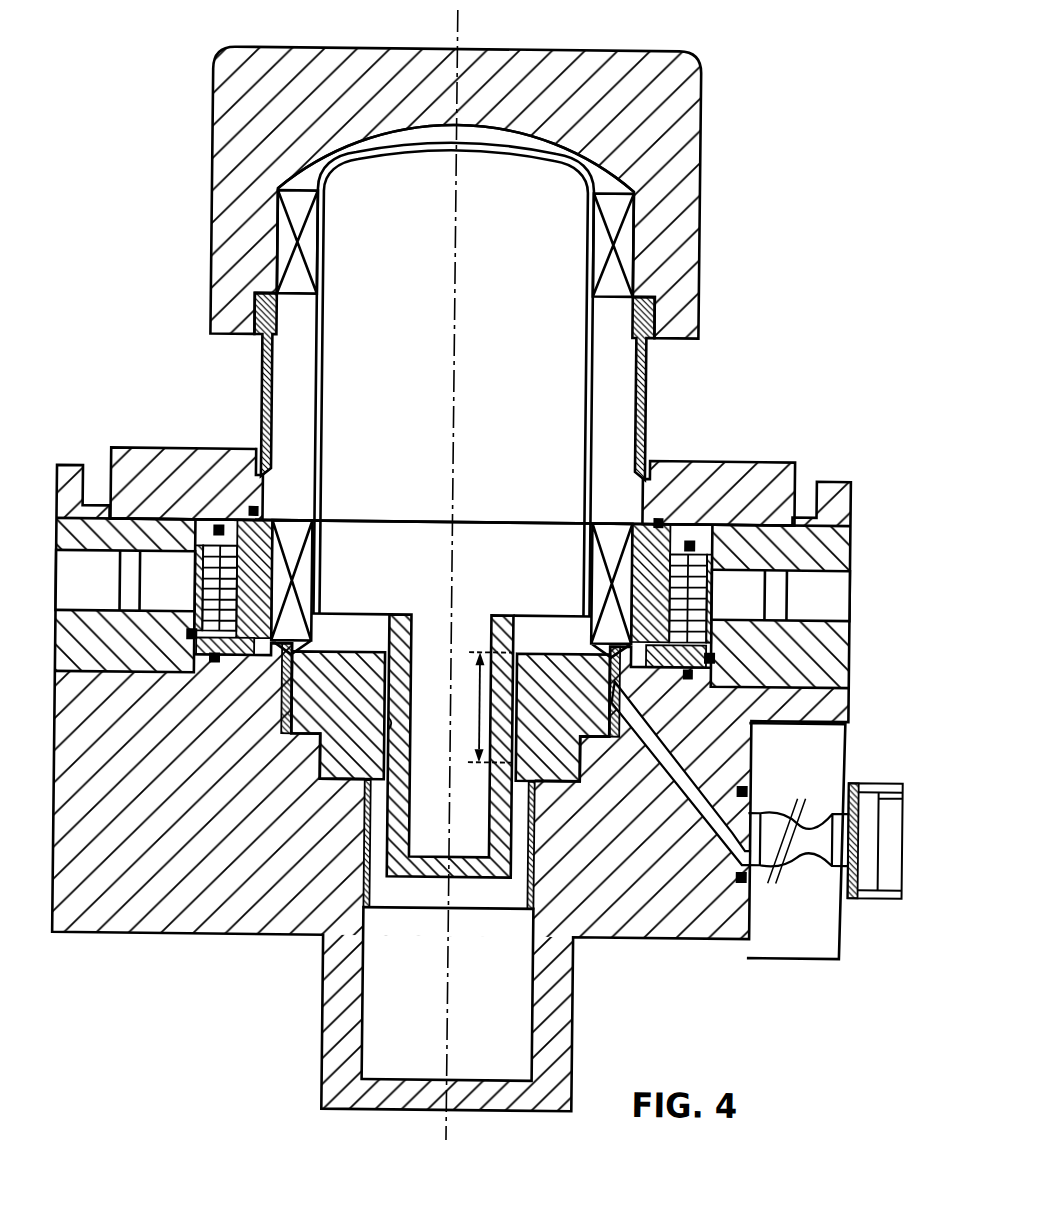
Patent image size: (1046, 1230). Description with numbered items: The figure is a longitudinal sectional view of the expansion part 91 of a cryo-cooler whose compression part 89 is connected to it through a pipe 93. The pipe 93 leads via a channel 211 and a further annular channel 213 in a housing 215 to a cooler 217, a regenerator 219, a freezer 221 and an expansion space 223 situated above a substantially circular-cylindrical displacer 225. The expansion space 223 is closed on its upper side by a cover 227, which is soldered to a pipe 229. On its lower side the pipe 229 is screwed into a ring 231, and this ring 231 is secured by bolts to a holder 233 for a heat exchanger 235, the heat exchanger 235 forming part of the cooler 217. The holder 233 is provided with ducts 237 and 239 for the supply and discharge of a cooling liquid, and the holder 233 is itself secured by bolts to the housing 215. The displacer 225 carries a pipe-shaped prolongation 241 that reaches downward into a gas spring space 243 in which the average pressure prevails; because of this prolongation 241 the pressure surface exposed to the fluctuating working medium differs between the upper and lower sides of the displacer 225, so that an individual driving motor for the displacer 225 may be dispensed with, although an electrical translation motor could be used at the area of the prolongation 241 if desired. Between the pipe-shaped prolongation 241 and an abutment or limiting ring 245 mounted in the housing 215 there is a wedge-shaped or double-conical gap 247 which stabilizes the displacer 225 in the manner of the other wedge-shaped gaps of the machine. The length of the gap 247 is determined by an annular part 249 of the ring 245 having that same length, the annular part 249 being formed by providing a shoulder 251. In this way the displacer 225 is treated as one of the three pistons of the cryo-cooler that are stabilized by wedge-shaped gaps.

The compression part 89 is at (883, 770).
The expansion part 91 is at (735, 329).
The pipe 93 is at (816, 850).
The channel 211 is at (675, 765).
The annular channel 213 is at (291, 694).
The housing 215 is at (224, 928).
The cooler 217 is at (300, 579).
The regenerator 219 is at (300, 349).
The freezer 221 is at (304, 241).
The expansion space 223 is at (344, 146).
The displacer 225 is at (568, 149).
The cover 227 is at (563, 64).
The pipe 229 is at (261, 372).
The ring 231 is at (772, 467).
The holder 233 is at (826, 541).
The heat exchanger 235 is at (216, 530).
The duct 237 is at (257, 592).
The duct 239 is at (650, 610).
The pipe-shaped prolongation 241 is at (385, 620).
The gas spring space 243 is at (523, 1027).
The limiting ring 245 is at (541, 657).
The wedge-shaped gap 247 is at (391, 724).
The annular part 249 is at (356, 651).
The shoulder 251 is at (549, 760).